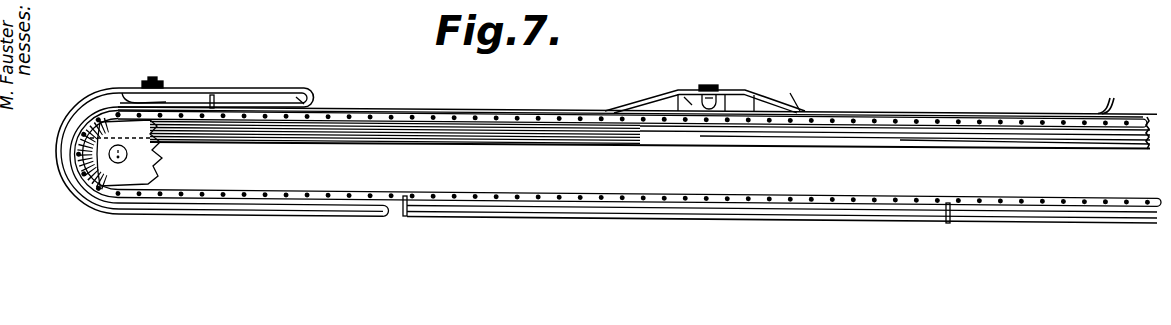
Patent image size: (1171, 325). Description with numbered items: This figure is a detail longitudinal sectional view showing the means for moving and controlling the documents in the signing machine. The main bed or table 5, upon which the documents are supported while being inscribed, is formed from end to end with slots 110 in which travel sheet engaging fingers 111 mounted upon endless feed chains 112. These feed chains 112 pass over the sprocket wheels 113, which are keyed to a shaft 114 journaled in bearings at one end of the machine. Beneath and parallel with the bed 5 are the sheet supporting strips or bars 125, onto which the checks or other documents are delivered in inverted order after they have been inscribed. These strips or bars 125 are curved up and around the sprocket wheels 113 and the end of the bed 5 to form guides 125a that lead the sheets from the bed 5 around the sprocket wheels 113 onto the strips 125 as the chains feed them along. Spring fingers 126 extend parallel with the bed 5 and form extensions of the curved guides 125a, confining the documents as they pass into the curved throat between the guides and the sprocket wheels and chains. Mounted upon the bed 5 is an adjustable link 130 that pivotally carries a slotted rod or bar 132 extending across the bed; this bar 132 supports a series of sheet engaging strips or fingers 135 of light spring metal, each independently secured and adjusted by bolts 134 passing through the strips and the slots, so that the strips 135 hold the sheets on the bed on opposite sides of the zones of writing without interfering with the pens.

The main bed or table 5 is at (473, 137).
The slots 110 is at (550, 128).
The sheet engaging fingers 111 is at (217, 106).
The endless feed chains 112 is at (643, 123).
The sprocket wheels 113 is at (147, 160).
The shaft 114 is at (117, 161).
The sheet supporting strips or bars 125 is at (385, 217).
The guides 125a is at (60, 168).
The spring fingers 126 is at (192, 103).
The adjustable link 130 is at (680, 92).
The rod or bar 132 is at (704, 89).
The bolts 134 is at (717, 86).
The sheet engaging strips or fingers 135 is at (498, 111).